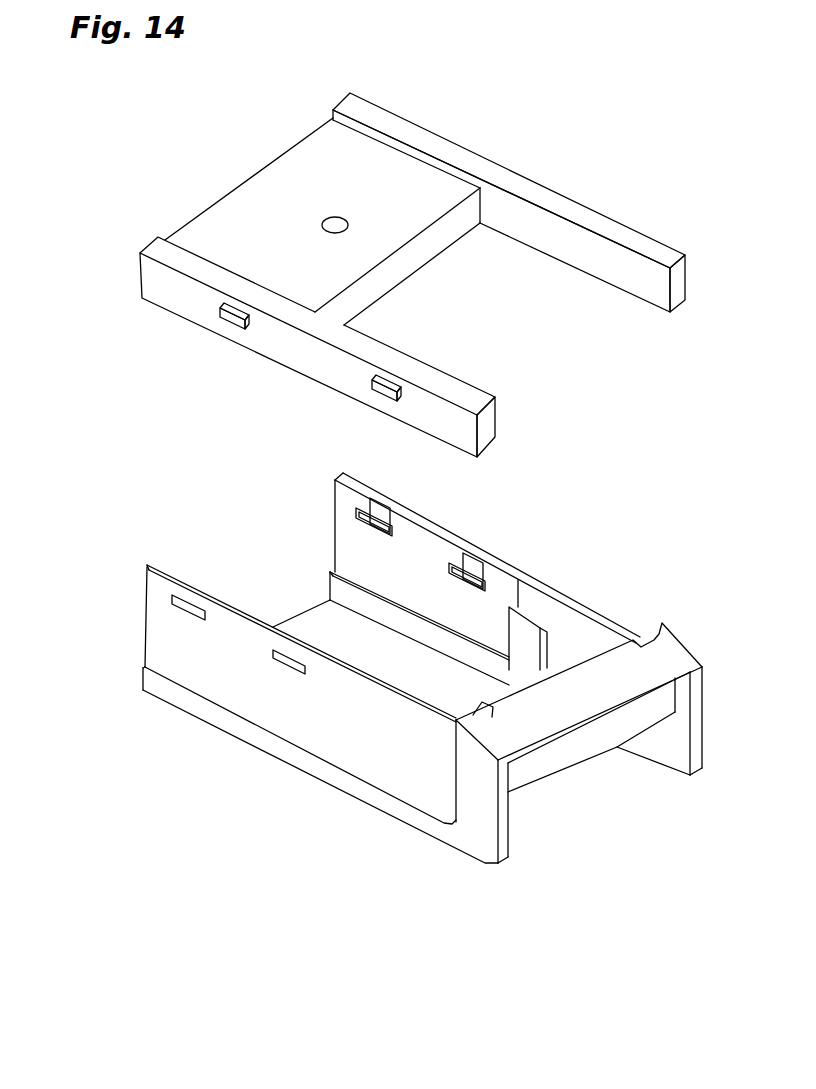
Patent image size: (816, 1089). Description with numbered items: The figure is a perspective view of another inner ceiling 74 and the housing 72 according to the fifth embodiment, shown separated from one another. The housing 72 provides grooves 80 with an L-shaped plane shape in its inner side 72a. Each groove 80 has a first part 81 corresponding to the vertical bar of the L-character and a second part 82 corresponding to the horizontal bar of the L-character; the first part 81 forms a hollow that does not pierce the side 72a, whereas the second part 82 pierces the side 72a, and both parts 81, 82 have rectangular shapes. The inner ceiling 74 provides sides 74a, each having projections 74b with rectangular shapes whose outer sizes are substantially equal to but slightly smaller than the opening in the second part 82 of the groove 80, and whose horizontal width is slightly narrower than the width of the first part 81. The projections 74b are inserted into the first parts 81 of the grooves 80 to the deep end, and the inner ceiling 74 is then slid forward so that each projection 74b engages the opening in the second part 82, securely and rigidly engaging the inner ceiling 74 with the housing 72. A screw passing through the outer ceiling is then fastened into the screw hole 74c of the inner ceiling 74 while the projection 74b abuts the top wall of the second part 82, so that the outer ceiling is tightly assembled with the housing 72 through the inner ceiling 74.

The housing 72 is at (582, 592).
The inner side of the housing 72a is at (428, 550).
The inner ceiling 74 is at (515, 168).
The side of the inner ceiling 74a is at (162, 292).
The projection 74b is at (227, 320).
The screw hole 74c is at (332, 225).
The groove 80 is at (380, 500).
The first part of the groove 81 is at (384, 504).
The second part of the groove 82 is at (360, 520).